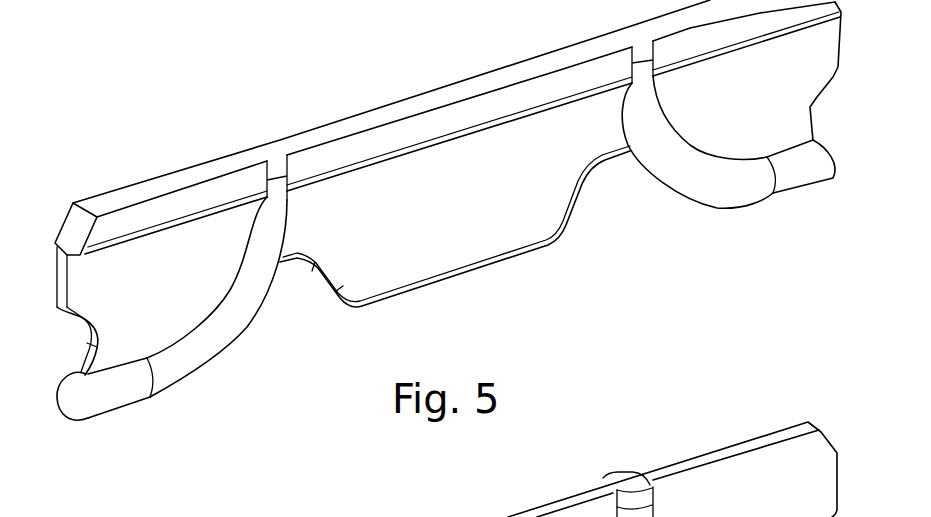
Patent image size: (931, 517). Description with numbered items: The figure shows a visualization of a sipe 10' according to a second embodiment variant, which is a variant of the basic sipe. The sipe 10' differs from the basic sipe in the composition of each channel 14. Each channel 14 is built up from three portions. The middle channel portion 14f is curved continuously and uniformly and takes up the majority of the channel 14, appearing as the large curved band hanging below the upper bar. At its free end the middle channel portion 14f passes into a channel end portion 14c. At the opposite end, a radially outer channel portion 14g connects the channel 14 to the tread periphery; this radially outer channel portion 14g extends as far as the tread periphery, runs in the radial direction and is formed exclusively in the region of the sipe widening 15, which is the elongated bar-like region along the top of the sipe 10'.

The sipe 10' is at (448, 187).
The sipe widening 15 is at (403, 132).
The channel 14 is at (178, 279).
The radially outer channel portion 14g is at (277, 167).
The middle channel portion 14f is at (213, 340).
The channel end portion 14c is at (117, 395).